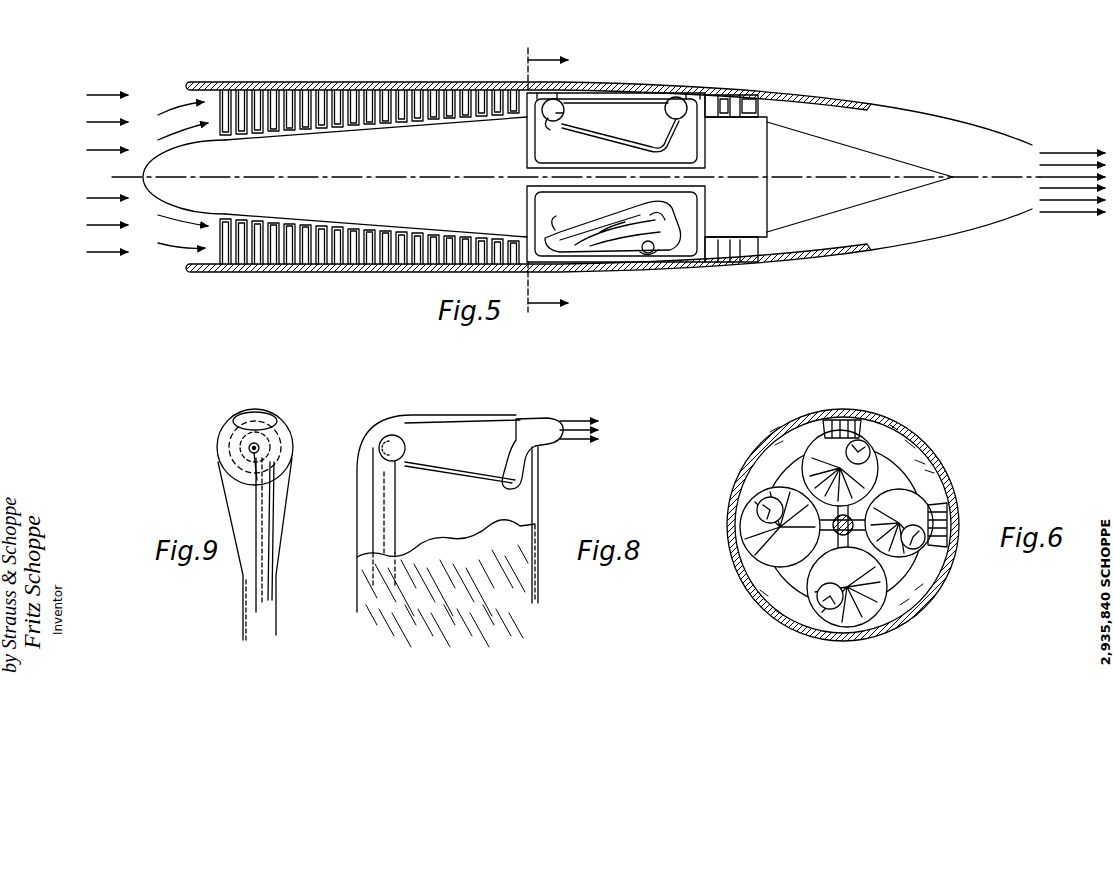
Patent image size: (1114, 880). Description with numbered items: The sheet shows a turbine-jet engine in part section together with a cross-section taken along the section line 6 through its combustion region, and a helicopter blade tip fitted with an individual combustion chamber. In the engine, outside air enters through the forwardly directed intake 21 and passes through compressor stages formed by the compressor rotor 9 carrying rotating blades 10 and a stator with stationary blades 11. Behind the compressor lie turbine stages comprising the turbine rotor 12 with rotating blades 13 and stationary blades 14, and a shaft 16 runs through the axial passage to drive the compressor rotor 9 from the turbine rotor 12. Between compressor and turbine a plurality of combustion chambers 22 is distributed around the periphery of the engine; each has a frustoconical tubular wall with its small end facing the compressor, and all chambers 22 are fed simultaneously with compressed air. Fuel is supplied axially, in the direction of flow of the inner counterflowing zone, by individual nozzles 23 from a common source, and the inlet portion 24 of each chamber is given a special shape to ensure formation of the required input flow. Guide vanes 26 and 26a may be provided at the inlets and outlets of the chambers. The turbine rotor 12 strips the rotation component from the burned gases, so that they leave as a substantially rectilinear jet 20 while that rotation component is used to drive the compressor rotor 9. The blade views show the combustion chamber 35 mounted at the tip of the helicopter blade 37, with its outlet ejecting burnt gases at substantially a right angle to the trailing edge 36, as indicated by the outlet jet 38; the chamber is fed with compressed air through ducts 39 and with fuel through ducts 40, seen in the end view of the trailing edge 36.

In FIG. 5, the section line 6— 6 is at (548, 184).
In FIG. 5, the compressor rotor 9 is at (352, 206).
In FIG. 5, the rotating blades 10 is at (229, 129).
In FIG. 5, the stationary blades 11 is at (236, 228).
In FIG. 5, the turbine rotor 12 is at (724, 136).
In FIG. 5, the rotating blades 13 is at (758, 108).
In FIG. 5, the stationary blades 14 is at (731, 99).
In FIG. 5, the shaft 16 is at (590, 176).
In FIG. 5, the rectilinear jet 20 is at (1061, 162).
In FIG. 5, the forwardly directed intake 21 is at (165, 110).
In FIG. 5, the combustion chambers 22 is at (646, 254).
In FIG. 6, the combustion chambers 22 is at (862, 494).
In FIG. 5, the individual nozzles 23 is at (682, 237).
In FIG. 5, the inlet portion 24 is at (553, 121).
In FIG. 6, the inlet portion 24 is at (760, 511).
In FIG. 5, the guide vanes 26 is at (546, 97).
In FIG. 6, the guide vanes 26 is at (845, 420).
In FIG. 5, the guide vanes 26a is at (692, 97).
In FIG. 8, the combustion chamber 35 is at (432, 449).
In FIG. 8, the trailing edge 36 is at (540, 533).
In FIG. 8, the blade 37 is at (532, 588).
In FIG. 8, the outlet jet of burnt gases 38 is at (563, 418).
In FIG. 8, the ducts 39 is at (387, 517).
In FIG. 9, the ducts 39 is at (270, 540).
In FIG. 8, the ducts 40 is at (540, 487).
In FIG. 9, the ducts 40 is at (250, 470).